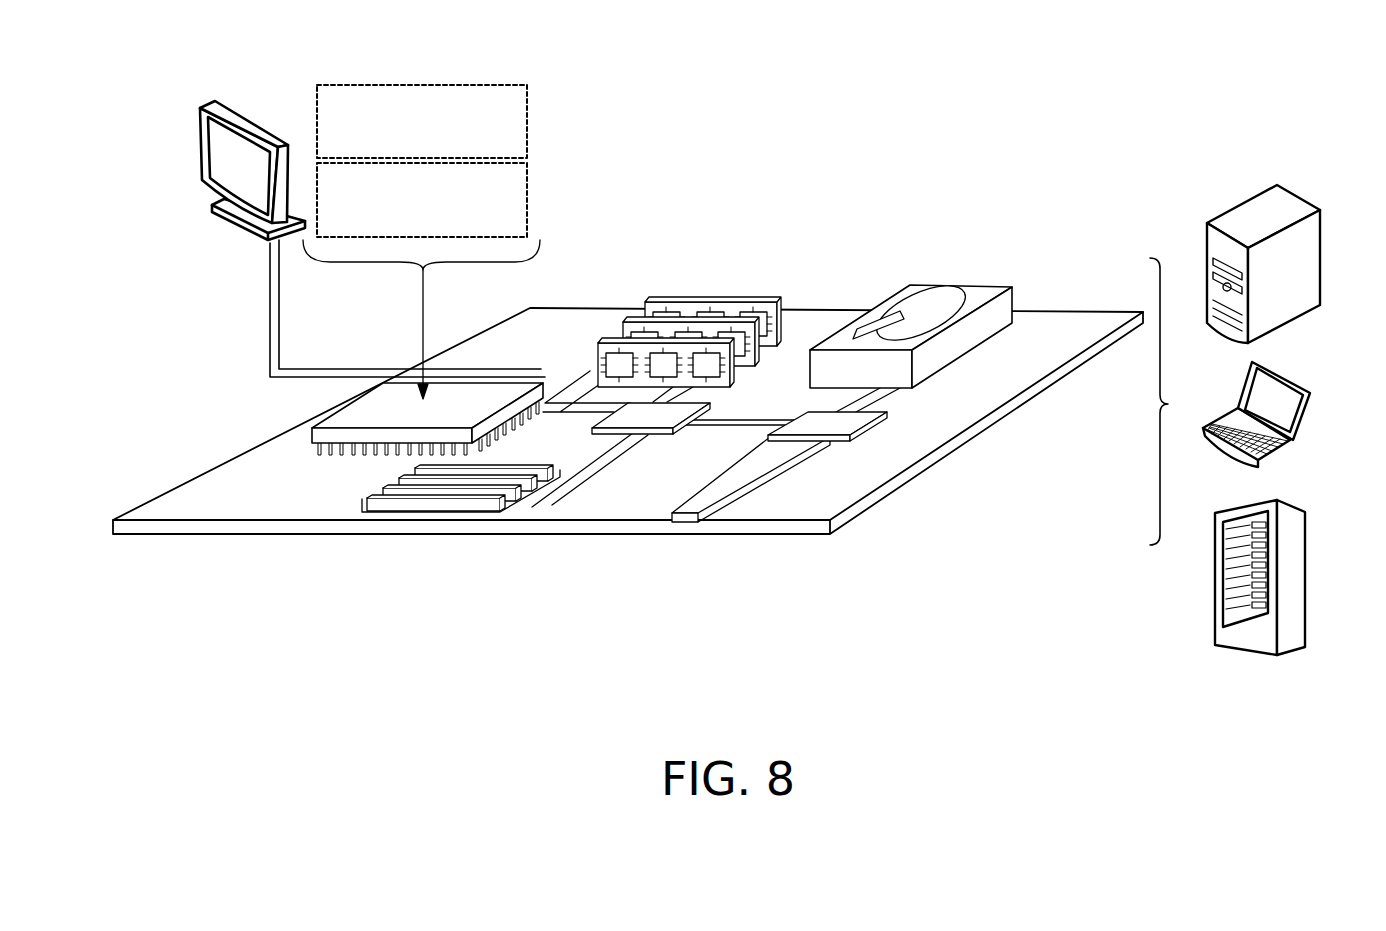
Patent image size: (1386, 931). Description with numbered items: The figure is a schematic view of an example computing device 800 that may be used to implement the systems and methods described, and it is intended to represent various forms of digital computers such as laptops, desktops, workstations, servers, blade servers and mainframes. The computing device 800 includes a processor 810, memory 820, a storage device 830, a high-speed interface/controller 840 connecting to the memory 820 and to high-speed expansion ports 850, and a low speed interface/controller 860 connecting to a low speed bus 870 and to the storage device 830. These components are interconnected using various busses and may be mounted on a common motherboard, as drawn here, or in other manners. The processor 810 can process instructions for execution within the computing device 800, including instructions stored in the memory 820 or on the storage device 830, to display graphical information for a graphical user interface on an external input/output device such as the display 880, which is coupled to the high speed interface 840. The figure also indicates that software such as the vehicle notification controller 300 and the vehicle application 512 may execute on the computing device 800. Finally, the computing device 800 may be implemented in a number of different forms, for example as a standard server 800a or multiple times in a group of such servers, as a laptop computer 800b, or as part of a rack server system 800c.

The computing device 800 is at (977, 86).
The processor 810 is at (312, 432).
The memory 820 is at (706, 303).
The storage device 830 is at (956, 283).
The high-speed interface/controller 840 is at (655, 438).
The high-speed expansion ports 850 is at (372, 497).
The low speed interface/controller 860 is at (818, 420).
The low speed bus 870 is at (700, 522).
The display 880 is at (198, 150).
The standard server 800a is at (1237, 206).
The laptop computer 800b is at (1290, 384).
The rack server system 800c is at (1298, 558).
The vehicle notification controller 300 is at (422, 121).
The vehicle software application 512 is at (422, 200).